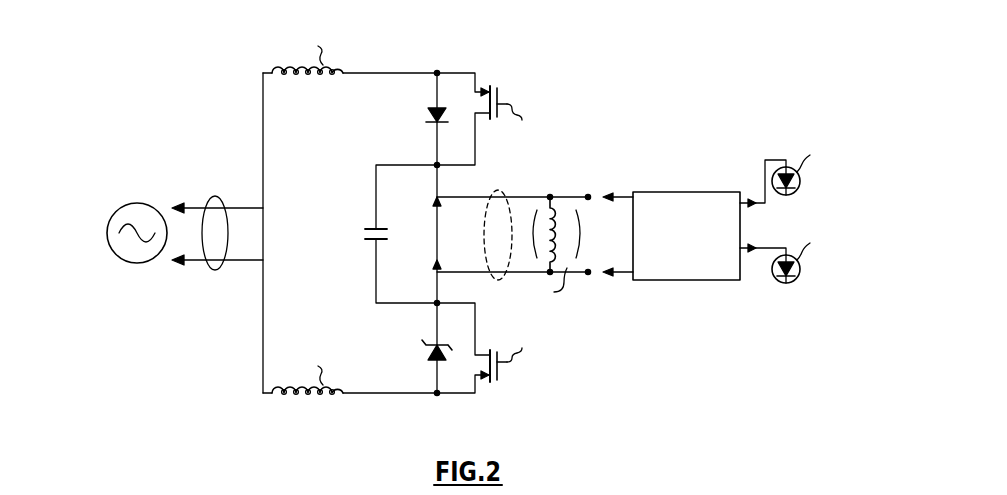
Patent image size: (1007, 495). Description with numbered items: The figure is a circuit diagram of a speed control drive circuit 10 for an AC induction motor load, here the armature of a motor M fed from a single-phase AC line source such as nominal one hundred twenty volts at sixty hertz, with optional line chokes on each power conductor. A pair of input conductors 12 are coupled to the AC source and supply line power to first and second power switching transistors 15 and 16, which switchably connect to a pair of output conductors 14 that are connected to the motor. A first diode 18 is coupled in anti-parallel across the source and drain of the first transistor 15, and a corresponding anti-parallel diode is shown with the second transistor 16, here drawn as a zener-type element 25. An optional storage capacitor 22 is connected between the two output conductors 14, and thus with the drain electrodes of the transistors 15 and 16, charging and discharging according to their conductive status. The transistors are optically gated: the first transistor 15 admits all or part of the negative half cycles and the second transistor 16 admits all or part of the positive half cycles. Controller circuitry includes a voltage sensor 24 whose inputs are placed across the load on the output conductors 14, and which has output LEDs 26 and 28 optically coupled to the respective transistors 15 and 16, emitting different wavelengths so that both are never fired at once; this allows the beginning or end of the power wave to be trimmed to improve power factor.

The drive circuit 10 is at (381, 53).
The input conductors 12 is at (215, 196).
The output conductors 14 is at (503, 192).
The first power switching transistor 15 is at (478, 85).
The second power switching transistor 16 is at (484, 382).
The first diode 18 is at (428, 114).
The storage capacitor 22 is at (371, 246).
The voltage sensor 24 is at (660, 283).
The zener diode 25 is at (428, 351).
The output LED 26 is at (799, 188).
The output LED 28 is at (799, 284).